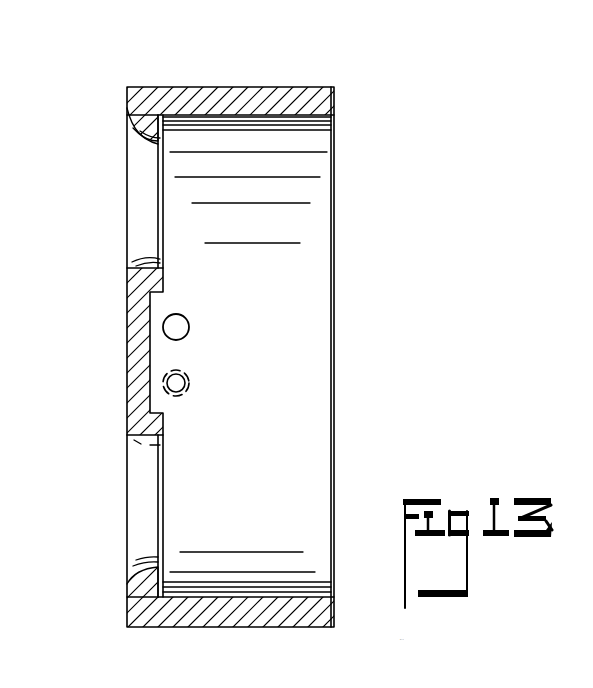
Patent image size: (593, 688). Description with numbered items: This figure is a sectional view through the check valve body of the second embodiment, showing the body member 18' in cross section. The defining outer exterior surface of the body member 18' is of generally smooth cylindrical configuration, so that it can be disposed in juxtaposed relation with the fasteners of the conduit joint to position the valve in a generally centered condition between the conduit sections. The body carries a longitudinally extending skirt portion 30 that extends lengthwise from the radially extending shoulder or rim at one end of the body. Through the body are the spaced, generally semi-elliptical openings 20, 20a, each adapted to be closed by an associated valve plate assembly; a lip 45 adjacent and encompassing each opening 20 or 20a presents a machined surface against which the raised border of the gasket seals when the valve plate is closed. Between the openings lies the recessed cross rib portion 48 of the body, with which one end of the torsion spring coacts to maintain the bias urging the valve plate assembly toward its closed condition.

The body member 18' is at (230, 322).
The skirt portion 30 is at (268, 88).
The lip 45 is at (160, 141).
The opening 20 is at (163, 225).
The recessed cross rib portion 48 is at (128, 372).
The opening 20a is at (160, 503).